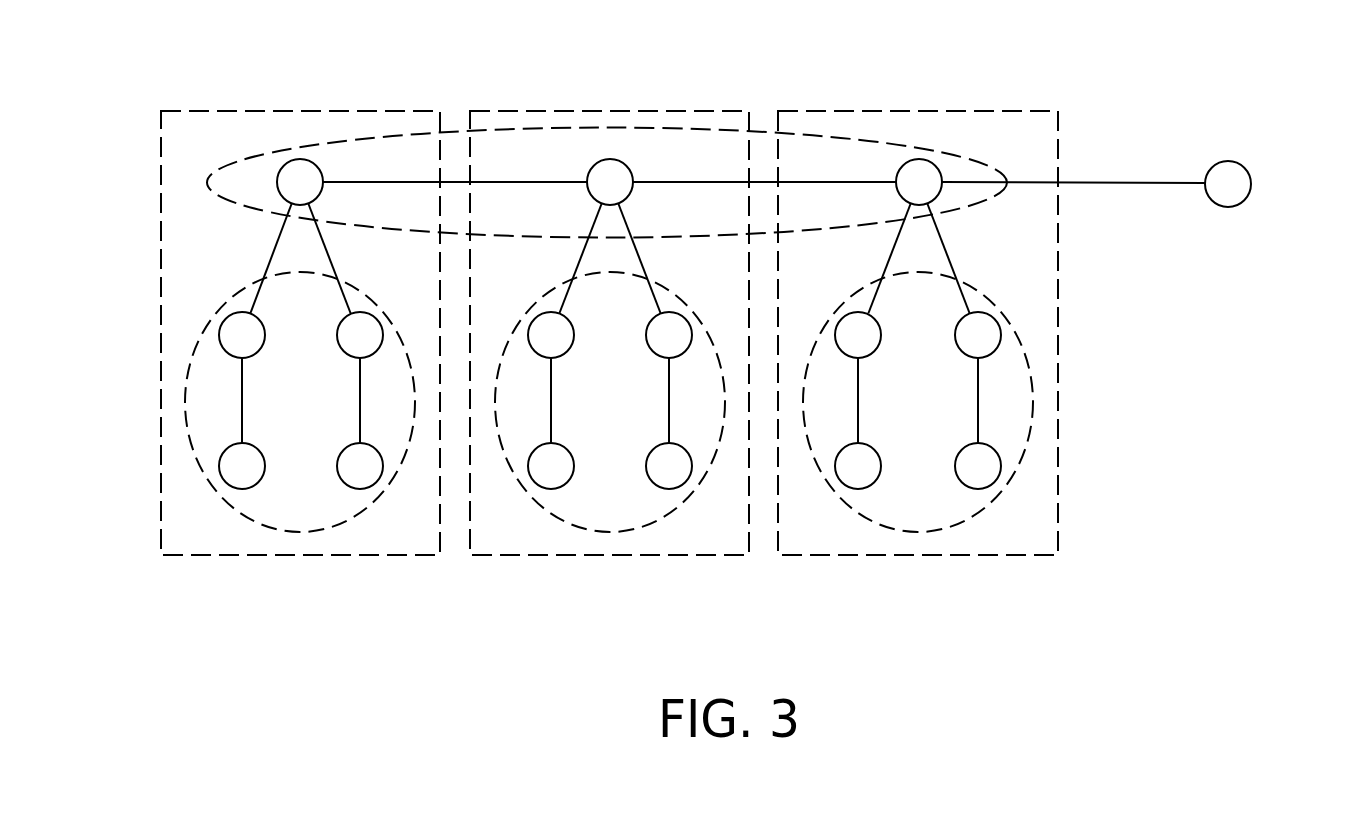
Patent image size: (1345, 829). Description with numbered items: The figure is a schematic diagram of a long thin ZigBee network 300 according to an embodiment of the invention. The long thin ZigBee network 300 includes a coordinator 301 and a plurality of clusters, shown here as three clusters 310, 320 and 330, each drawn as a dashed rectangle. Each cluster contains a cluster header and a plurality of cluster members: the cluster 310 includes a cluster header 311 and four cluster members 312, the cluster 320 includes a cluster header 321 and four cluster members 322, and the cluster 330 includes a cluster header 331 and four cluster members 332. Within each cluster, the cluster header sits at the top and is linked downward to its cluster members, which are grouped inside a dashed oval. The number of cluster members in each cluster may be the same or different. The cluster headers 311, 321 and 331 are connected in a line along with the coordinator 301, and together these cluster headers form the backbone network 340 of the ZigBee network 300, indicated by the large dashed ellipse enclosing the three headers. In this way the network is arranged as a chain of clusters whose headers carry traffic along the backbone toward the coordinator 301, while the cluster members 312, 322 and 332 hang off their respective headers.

The long thin ZigBee network 300 is at (1243, 622).
The coordinator 301 is at (1243, 173).
The cluster 310 is at (913, 111).
The cluster header 311 is at (912, 173).
The cluster members 312 is at (905, 532).
The cluster 320 is at (605, 111).
The cluster header 321 is at (623, 173).
The cluster members 322 is at (597, 532).
The cluster 330 is at (297, 111).
The cluster header 331 is at (313, 173).
The cluster members 332 is at (288, 531).
The backbone network 340 is at (230, 167).